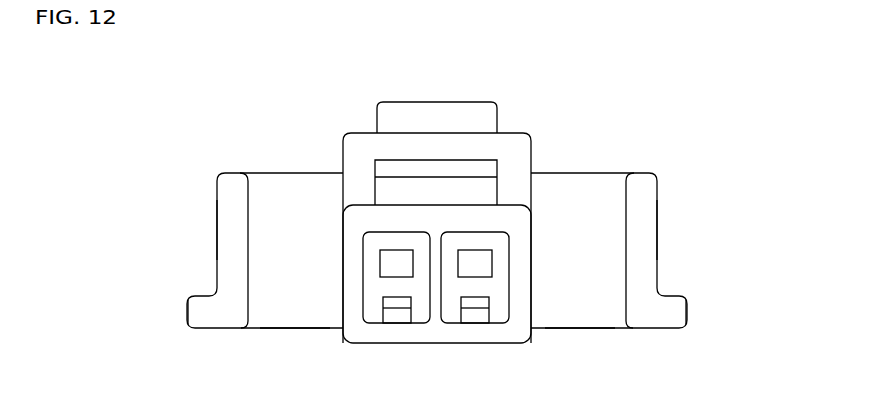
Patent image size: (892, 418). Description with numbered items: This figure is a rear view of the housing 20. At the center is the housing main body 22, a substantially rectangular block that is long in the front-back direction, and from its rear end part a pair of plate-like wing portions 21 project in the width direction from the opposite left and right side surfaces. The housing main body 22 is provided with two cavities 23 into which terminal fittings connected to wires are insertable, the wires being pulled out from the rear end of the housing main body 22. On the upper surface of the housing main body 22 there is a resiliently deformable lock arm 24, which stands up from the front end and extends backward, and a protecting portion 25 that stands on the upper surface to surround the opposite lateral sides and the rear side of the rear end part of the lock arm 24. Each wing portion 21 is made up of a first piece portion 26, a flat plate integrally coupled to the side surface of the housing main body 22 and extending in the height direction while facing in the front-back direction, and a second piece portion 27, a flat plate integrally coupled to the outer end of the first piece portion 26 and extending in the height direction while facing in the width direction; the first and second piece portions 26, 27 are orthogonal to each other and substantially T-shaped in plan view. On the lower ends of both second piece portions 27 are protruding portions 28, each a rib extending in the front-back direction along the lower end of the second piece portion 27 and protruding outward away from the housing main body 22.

The housing 20 is at (432, 226).
The wing portion 21 is at (278, 173).
The housing main body 22 is at (435, 343).
The cavity 23 is at (382, 263).
The lock arm 24 is at (483, 112).
The protecting portion 25 is at (371, 142).
The first piece portion 26 is at (292, 312).
The second piece portion 27 is at (223, 213).
The protruding portion 28 is at (192, 308).